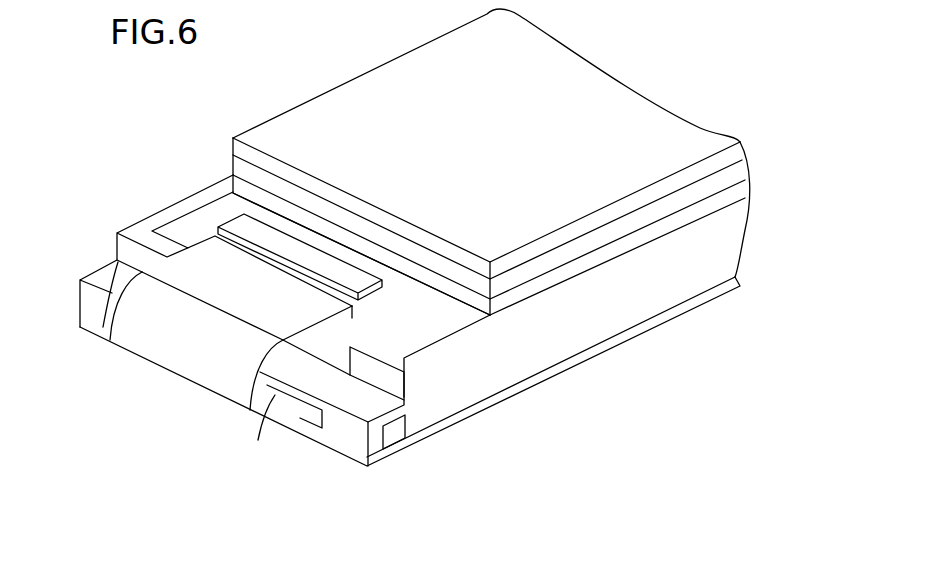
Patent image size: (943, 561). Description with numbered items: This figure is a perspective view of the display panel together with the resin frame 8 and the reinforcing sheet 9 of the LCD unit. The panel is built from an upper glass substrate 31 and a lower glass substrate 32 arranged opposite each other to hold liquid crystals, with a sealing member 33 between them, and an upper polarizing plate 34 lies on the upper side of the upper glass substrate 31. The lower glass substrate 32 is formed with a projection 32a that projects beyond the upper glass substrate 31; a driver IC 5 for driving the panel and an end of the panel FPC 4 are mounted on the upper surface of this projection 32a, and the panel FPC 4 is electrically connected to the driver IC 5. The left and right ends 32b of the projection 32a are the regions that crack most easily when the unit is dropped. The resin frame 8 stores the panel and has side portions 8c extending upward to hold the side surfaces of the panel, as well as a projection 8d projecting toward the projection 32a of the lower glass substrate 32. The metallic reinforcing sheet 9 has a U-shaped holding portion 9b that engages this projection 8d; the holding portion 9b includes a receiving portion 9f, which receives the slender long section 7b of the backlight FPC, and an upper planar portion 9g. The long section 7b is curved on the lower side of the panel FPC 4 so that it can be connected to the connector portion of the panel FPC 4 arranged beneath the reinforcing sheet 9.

The panel FPC 4 is at (183, 343).
The driver IC 5 is at (248, 230).
The long section 7b is at (282, 405).
The resin frame 8 is at (713, 250).
The side portion 8c is at (135, 258).
The projection 8d is at (395, 432).
The reinforcing sheet 9 is at (598, 350).
The U-shaped holding portion 9b is at (338, 428).
The receiving portion 9f is at (307, 413).
The upper planar portion 9g is at (367, 395).
The upper glass substrate 31 is at (730, 172).
The lower glass substrate 32 is at (735, 207).
The projection 32a is at (388, 310).
The left and right ends 32b is at (190, 233).
The sealing member 33 is at (735, 190).
The upper polarizing plate 34 is at (330, 115).